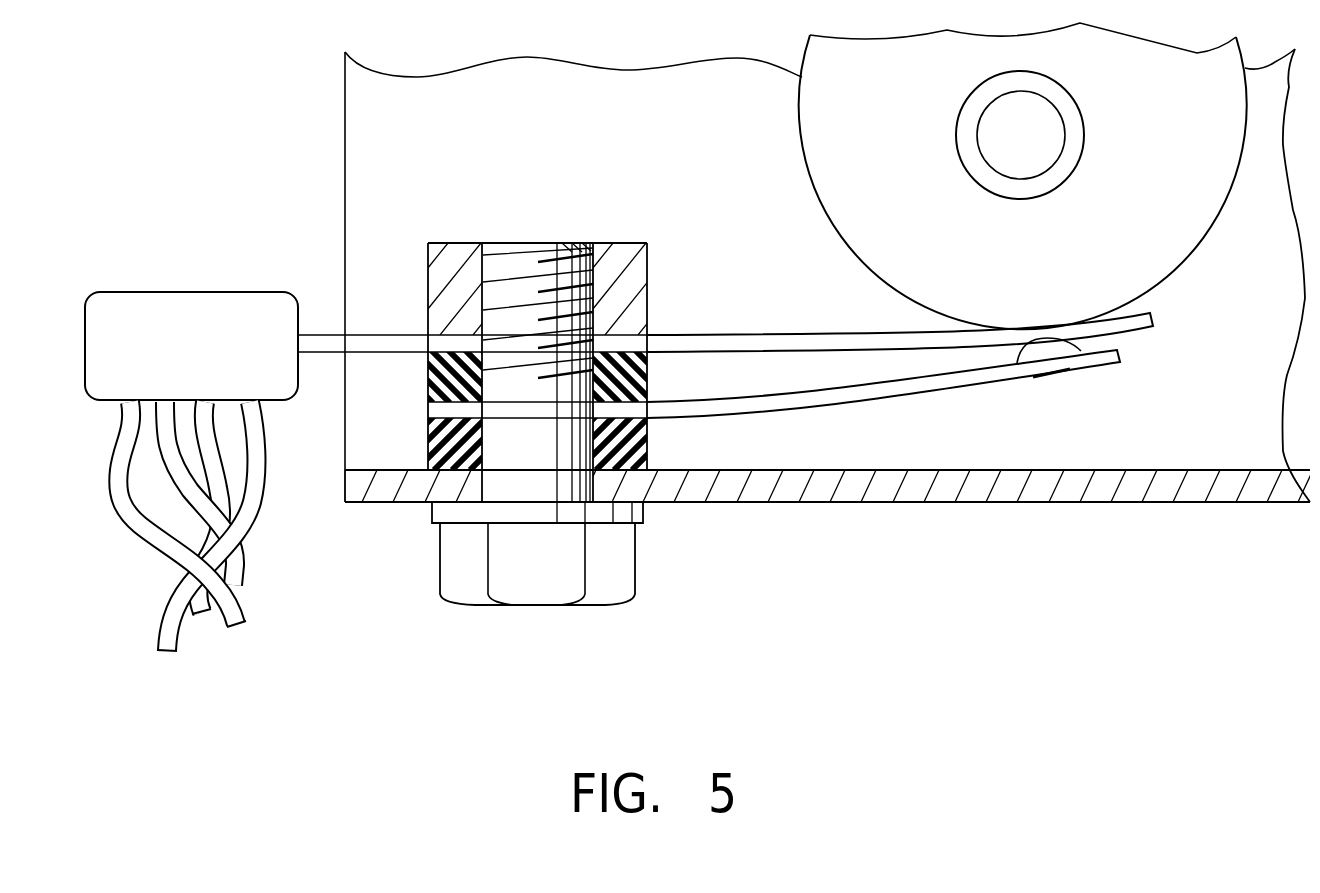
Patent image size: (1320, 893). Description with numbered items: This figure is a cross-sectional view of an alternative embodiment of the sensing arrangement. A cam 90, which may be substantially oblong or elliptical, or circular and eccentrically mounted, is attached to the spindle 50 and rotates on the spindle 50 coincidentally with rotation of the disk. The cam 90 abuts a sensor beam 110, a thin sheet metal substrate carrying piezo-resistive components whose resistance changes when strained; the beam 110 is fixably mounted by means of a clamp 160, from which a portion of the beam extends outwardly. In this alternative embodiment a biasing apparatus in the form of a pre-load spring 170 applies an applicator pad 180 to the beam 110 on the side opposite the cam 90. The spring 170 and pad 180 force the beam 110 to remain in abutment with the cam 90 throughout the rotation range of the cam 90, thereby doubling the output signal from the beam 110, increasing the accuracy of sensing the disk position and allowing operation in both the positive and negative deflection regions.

The spindle 50 is at (1065, 148).
The cam 90 is at (935, 236).
The sensor beam 110 is at (813, 335).
The clamp 160 is at (690, 444).
The pre-load spring 170 is at (903, 388).
The applicator pad 180 is at (1050, 350).